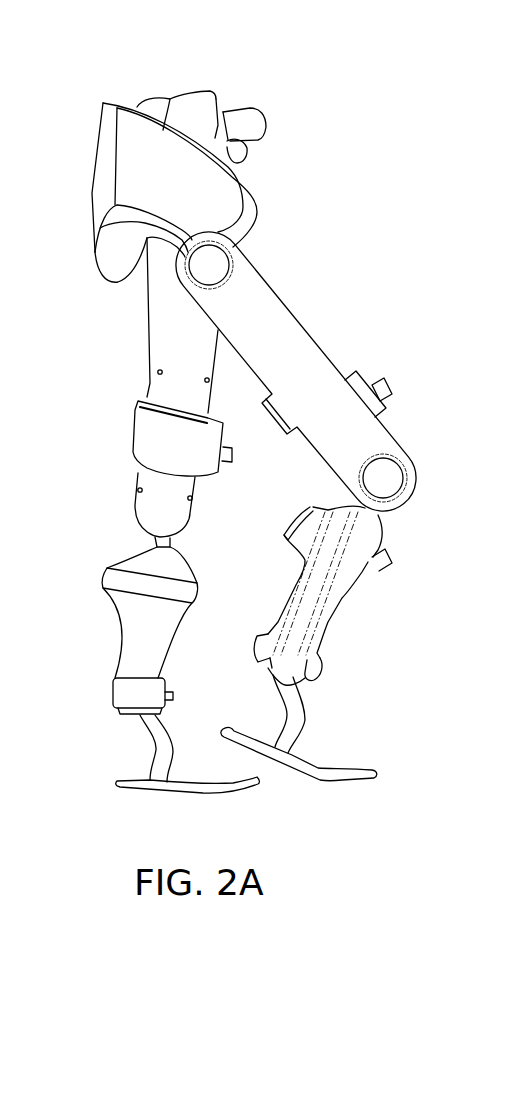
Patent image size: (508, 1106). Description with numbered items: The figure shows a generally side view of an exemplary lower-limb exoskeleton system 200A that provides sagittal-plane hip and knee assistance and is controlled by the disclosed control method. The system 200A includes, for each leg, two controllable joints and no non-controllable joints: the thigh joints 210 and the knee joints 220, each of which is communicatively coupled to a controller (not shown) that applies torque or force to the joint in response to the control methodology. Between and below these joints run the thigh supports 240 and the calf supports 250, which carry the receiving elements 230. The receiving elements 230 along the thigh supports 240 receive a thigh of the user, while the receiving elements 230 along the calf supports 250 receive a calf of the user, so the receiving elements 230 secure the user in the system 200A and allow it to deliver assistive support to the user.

The system 200A is at (315, 59).
The thigh joint 210 is at (220, 268).
The knee joint 220 is at (390, 478).
The receiving element 230 is at (152, 428).
The thigh support 240 is at (285, 323).
The calf support 250 is at (320, 588).